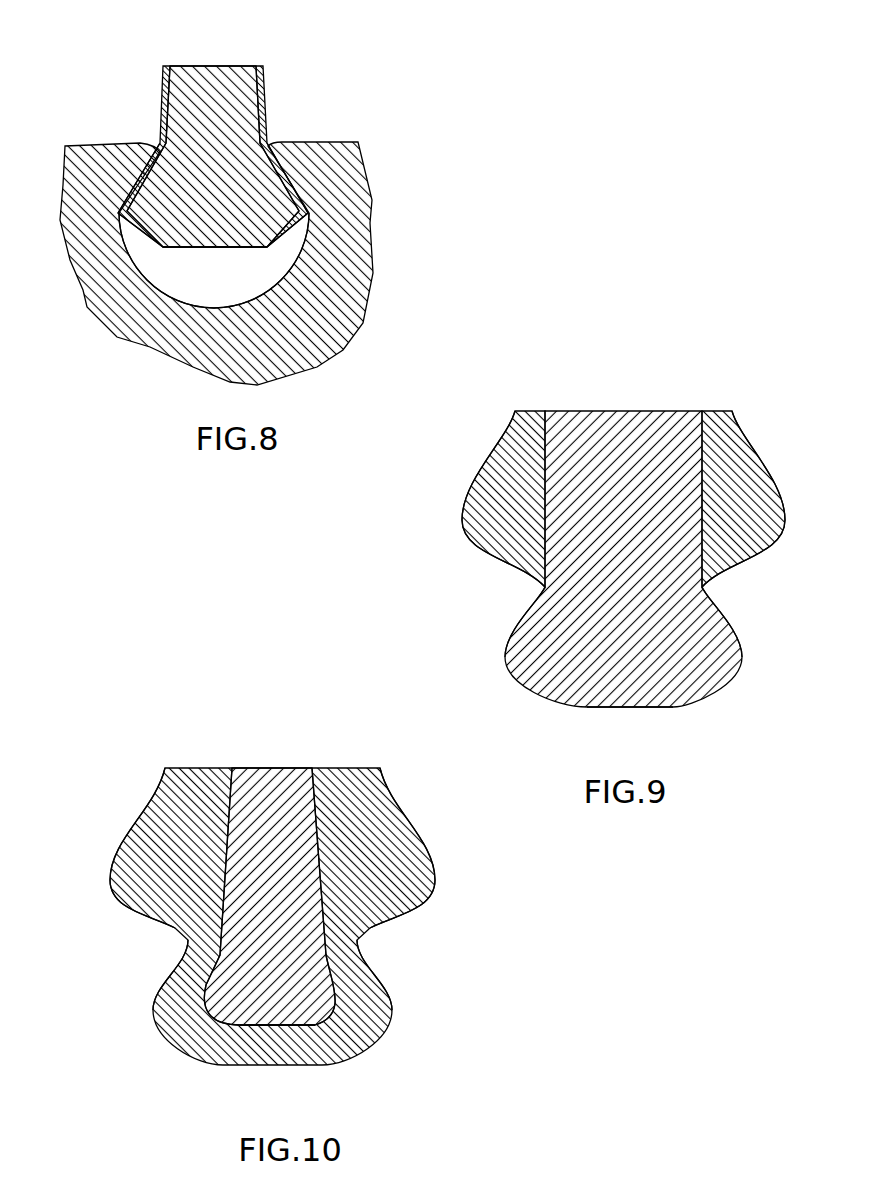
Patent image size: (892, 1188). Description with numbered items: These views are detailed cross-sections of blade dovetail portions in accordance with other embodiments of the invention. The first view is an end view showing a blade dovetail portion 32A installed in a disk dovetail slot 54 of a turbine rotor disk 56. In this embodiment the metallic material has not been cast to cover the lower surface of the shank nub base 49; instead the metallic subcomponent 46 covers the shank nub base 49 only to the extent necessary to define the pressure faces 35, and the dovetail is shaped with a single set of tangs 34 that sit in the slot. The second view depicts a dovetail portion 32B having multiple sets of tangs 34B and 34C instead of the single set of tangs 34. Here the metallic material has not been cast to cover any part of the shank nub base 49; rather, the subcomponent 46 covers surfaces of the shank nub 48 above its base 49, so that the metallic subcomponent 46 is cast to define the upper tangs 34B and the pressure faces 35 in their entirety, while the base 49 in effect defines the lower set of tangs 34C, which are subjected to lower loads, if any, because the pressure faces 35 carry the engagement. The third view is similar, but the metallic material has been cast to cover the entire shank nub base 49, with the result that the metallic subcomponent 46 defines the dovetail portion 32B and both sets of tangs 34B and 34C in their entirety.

In FIG. 8, the dovetail portion 32A is at (218, 159).
In FIG. 9, the dovetail portion 32B is at (601, 554).
In FIG. 10, the dovetail portion 32B is at (296, 919).
In FIG. 8, the tangs 34 is at (131, 240).
In FIG. 9, the upper set of tangs 34B is at (468, 543).
In FIG. 10, the upper set of tangs 34B is at (118, 850).
In FIG. 9, the lower set of tangs 34C is at (505, 658).
In FIG. 10, the lower set of tangs 34C is at (153, 1013).
In FIG. 8, the pressure faces 35 is at (141, 173).
In FIG. 9, the pressure faces 35 is at (485, 495).
In FIG. 8, the metallic subcomponent 46 is at (262, 88).
In FIG. 9, the metallic subcomponent 46 is at (508, 437).
In FIG. 10, the metallic subcomponent 46 is at (272, 916).
In FIG. 8, the shank nub 48 is at (204, 68).
In FIG. 9, the shank nub 48 is at (618, 442).
In FIG. 10, the shank nub 48 is at (270, 777).
In FIG. 8, the shank nub base 49 is at (195, 240).
In FIG. 9, the shank nub base 49 is at (677, 708).
In FIG. 10, the shank nub base 49 is at (340, 1012).
In FIG. 8, the disk dovetail slot 54 is at (196, 302).
In FIG. 8, the turbine rotor disk 56 is at (117, 146).